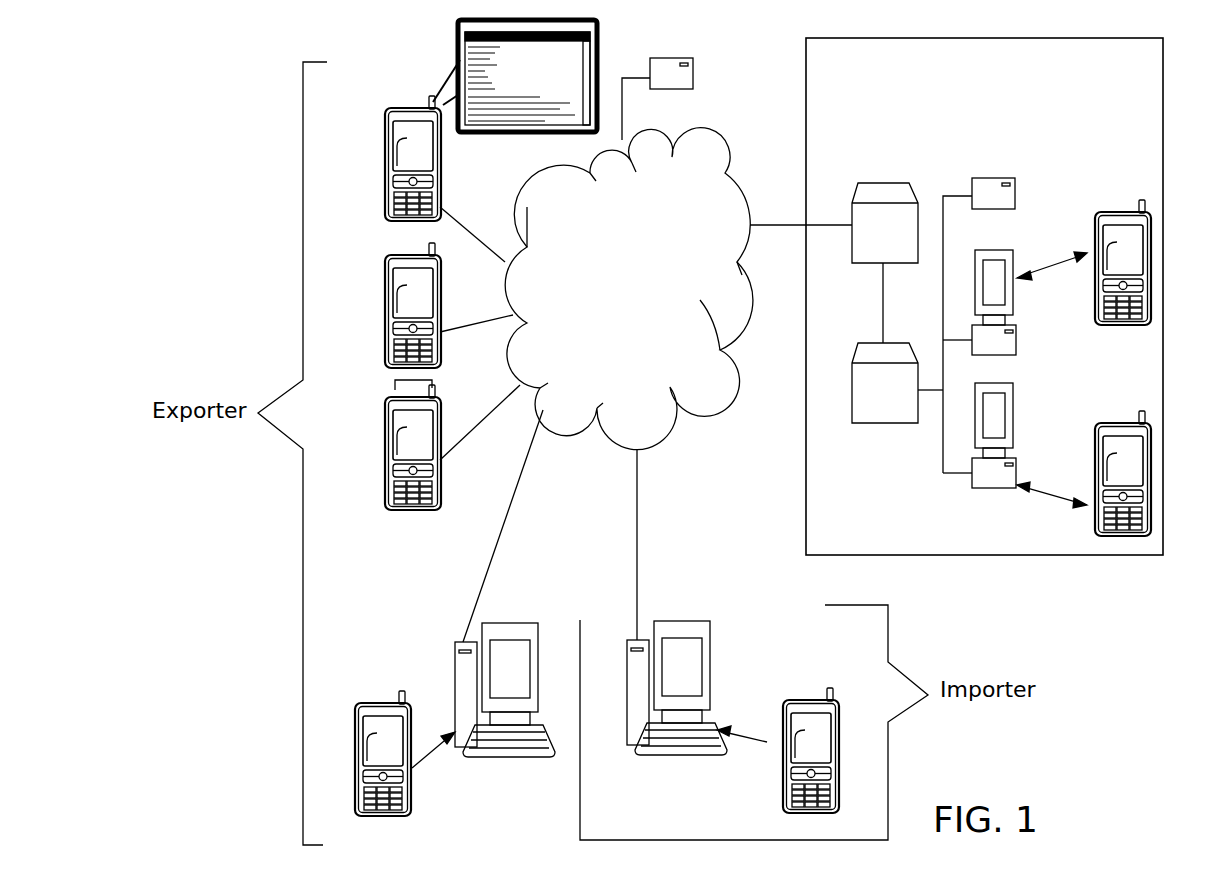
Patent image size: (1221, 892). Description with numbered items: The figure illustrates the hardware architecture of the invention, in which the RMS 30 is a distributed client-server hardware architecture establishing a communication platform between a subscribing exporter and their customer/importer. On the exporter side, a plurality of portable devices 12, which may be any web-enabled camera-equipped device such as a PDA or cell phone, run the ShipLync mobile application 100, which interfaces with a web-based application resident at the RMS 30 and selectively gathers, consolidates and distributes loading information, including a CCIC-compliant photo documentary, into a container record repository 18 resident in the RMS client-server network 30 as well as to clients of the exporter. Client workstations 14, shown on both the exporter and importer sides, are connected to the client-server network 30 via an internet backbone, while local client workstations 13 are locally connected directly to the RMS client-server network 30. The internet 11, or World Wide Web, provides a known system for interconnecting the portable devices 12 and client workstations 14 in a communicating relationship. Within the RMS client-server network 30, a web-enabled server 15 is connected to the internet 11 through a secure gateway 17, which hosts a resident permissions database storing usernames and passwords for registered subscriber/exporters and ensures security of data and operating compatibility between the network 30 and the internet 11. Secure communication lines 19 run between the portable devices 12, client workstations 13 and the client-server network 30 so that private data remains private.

The internet 11 is at (629, 289).
The portable device 12 is at (385, 202).
The local client workstation 13 is at (1018, 330).
The client workstation 14 is at (505, 759).
The web-enabled server 15 is at (897, 343).
The secure gateway 17 is at (885, 223).
The container record repository 18 is at (696, 70).
The secure communication line 19 is at (646, 360).
The RMS client-server network 30 is at (847, 82).
The ShipLync mobile application 100 is at (535, 92).